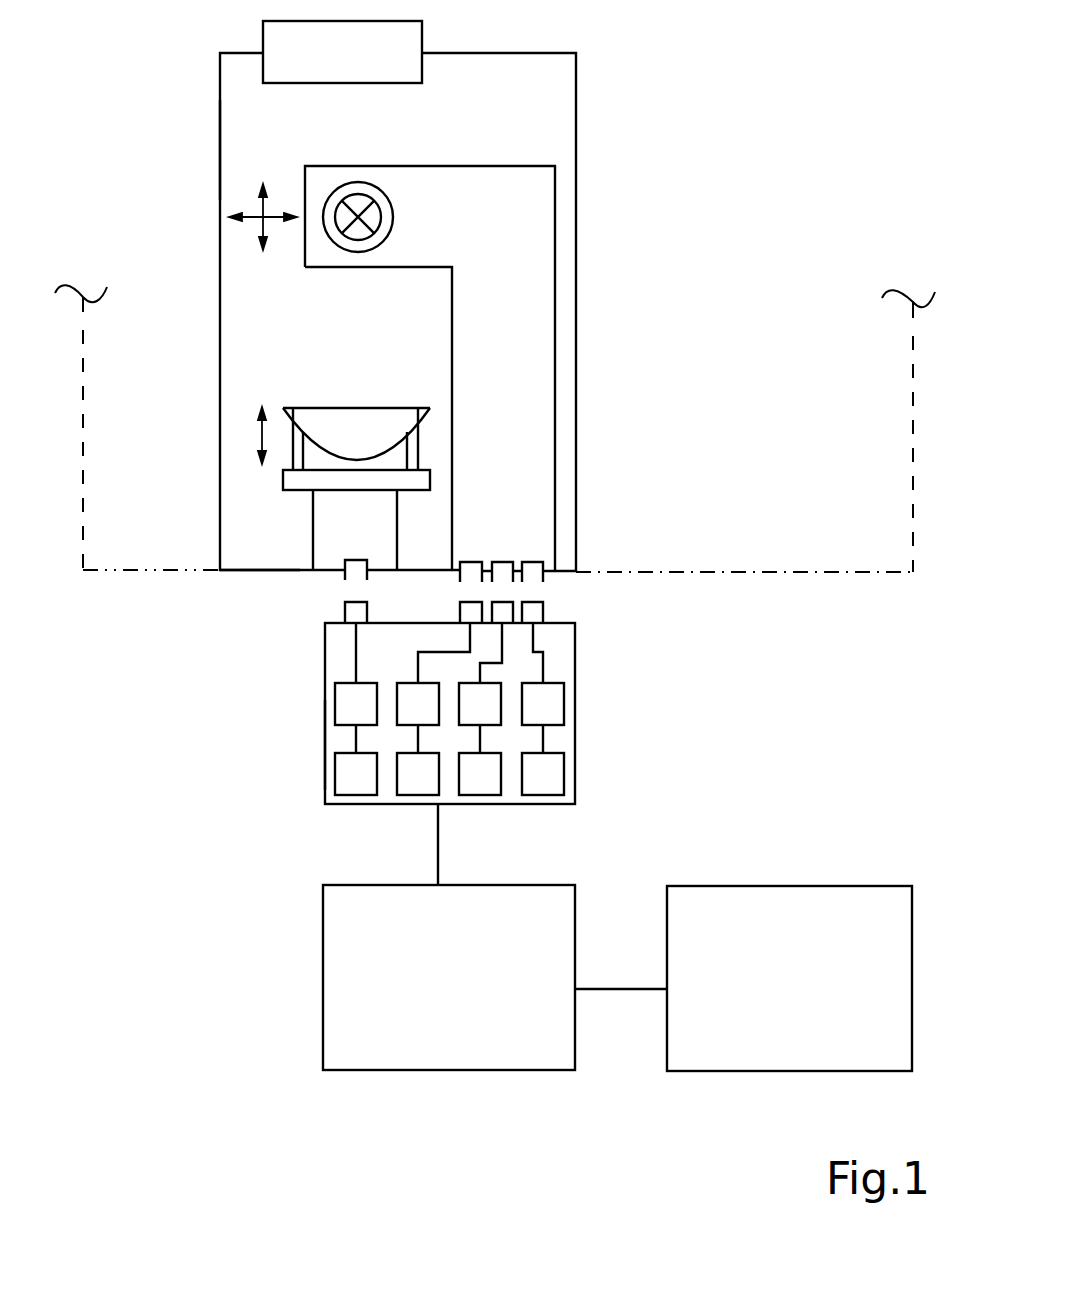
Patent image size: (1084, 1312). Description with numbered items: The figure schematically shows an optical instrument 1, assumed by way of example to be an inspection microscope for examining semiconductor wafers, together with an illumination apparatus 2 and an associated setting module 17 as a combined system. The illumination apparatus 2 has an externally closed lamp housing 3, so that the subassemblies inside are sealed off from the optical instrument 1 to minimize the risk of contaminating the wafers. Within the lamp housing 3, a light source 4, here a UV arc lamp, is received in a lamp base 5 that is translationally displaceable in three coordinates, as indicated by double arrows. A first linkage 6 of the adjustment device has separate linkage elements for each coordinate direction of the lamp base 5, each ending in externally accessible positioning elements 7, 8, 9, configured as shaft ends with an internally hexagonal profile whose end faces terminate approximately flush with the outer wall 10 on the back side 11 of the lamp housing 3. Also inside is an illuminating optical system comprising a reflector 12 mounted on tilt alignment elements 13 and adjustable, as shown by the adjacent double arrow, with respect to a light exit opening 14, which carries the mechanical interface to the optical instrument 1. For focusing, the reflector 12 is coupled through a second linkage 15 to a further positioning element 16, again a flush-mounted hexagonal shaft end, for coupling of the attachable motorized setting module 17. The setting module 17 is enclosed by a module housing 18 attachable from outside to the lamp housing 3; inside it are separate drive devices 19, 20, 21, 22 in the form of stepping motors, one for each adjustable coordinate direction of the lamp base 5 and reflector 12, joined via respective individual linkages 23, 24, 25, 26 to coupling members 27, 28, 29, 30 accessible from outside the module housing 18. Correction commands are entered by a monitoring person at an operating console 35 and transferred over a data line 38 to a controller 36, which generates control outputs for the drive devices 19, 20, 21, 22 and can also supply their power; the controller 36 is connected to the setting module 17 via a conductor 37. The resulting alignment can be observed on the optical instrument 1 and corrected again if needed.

The optical instrument 1 is at (108, 374).
The illumination apparatus 2 is at (220, 93).
The lamp housing 3 is at (220, 145).
The light source 4 is at (350, 200).
The lamp base 5 is at (330, 229).
The first linkage 6 is at (430, 369).
The positioning element 7 is at (475, 567).
The positioning element 8 is at (505, 568).
The positioning element 9 is at (537, 575).
The outer wall 10 is at (273, 572).
The back side 11 is at (232, 572).
The reflector 12 is at (344, 438).
The tilt alignment elements 13 is at (297, 462).
The light exit opening 14 is at (342, 52).
The second linkage 15 is at (355, 530).
The positioning element 16 is at (345, 575).
The setting module 17 is at (325, 718).
The module housing 18 is at (325, 780).
The drive device 19 is at (356, 774).
The drive device 20 is at (418, 774).
The drive device 21 is at (480, 774).
The drive device 22 is at (543, 774).
The individual linkage 23 is at (356, 704).
The individual linkage 24 is at (418, 704).
The individual linkage 25 is at (480, 704).
The individual linkage 26 is at (543, 704).
The coupling member 27 is at (353, 614).
The coupling member 28 is at (470, 613).
The coupling member 29 is at (505, 615).
The coupling member 30 is at (533, 617).
The operating console 35 is at (789, 978).
The controller 36 is at (449, 977).
The conductor 37 is at (440, 843).
The data line 38 is at (626, 988).